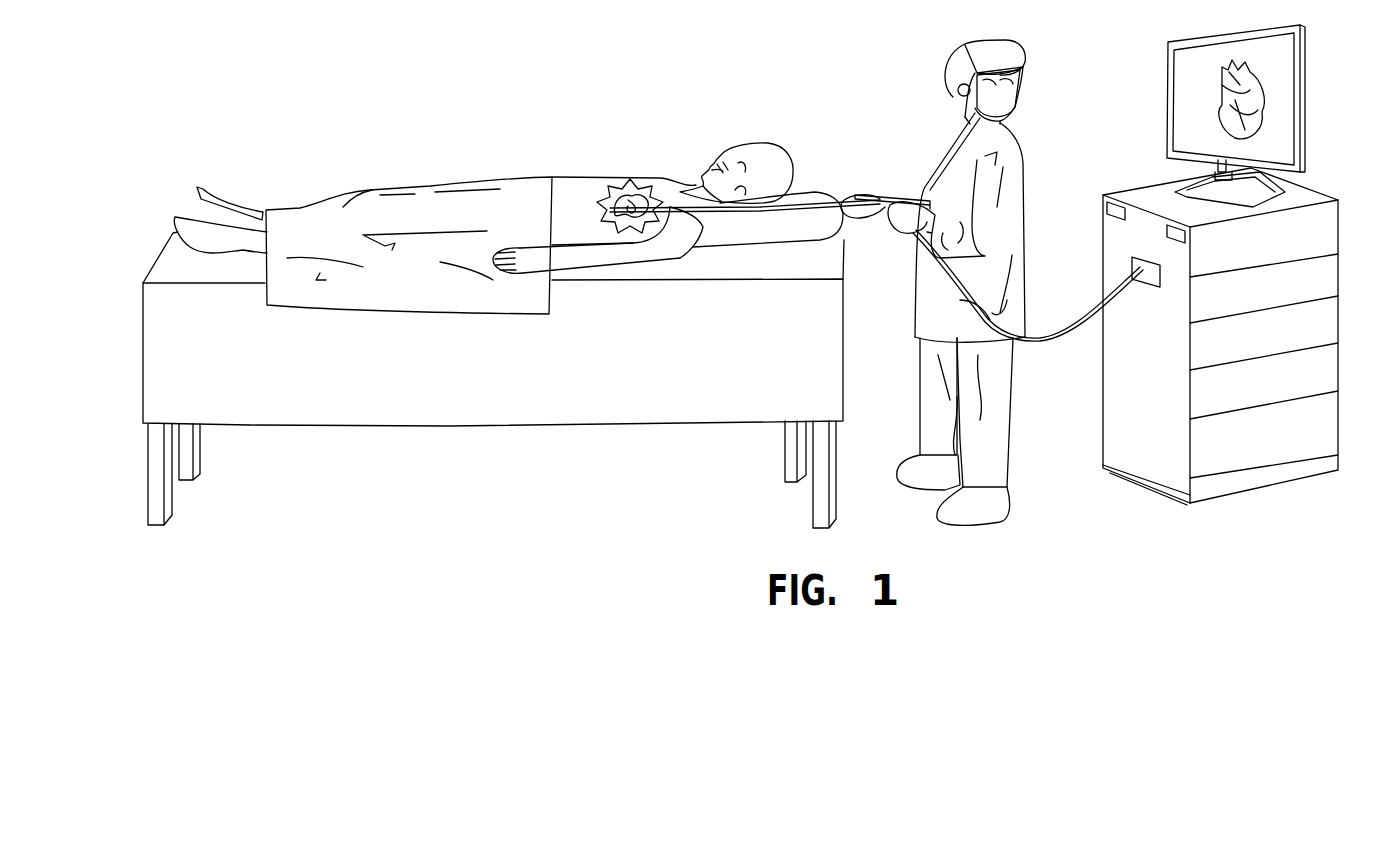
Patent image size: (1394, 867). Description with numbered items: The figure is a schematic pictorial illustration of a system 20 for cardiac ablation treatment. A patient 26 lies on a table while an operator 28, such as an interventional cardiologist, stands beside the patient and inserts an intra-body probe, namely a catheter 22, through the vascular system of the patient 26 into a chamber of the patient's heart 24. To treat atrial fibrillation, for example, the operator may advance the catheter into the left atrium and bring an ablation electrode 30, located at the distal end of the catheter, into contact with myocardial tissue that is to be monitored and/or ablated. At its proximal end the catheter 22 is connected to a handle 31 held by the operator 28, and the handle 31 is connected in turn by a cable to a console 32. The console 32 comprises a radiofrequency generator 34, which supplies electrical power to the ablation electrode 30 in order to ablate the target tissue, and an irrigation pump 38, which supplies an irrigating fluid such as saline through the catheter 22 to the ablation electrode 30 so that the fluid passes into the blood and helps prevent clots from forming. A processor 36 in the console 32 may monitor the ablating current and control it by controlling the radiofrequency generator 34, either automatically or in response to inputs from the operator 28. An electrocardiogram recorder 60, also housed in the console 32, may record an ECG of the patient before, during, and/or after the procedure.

The system 20 is at (490, 83).
The catheter 22 is at (835, 201).
The heart 24 is at (620, 190).
The patient 26 is at (767, 145).
The operator 28 is at (1012, 40).
The ablation electrode 30 is at (622, 222).
The handle 31 is at (880, 192).
The console 32 is at (1103, 422).
The radiofrequency generator 34 is at (1340, 361).
The processor 36 is at (1340, 315).
The irrigation pump 38 is at (1340, 265).
The electrocardiogram recorder 60 is at (1340, 433).